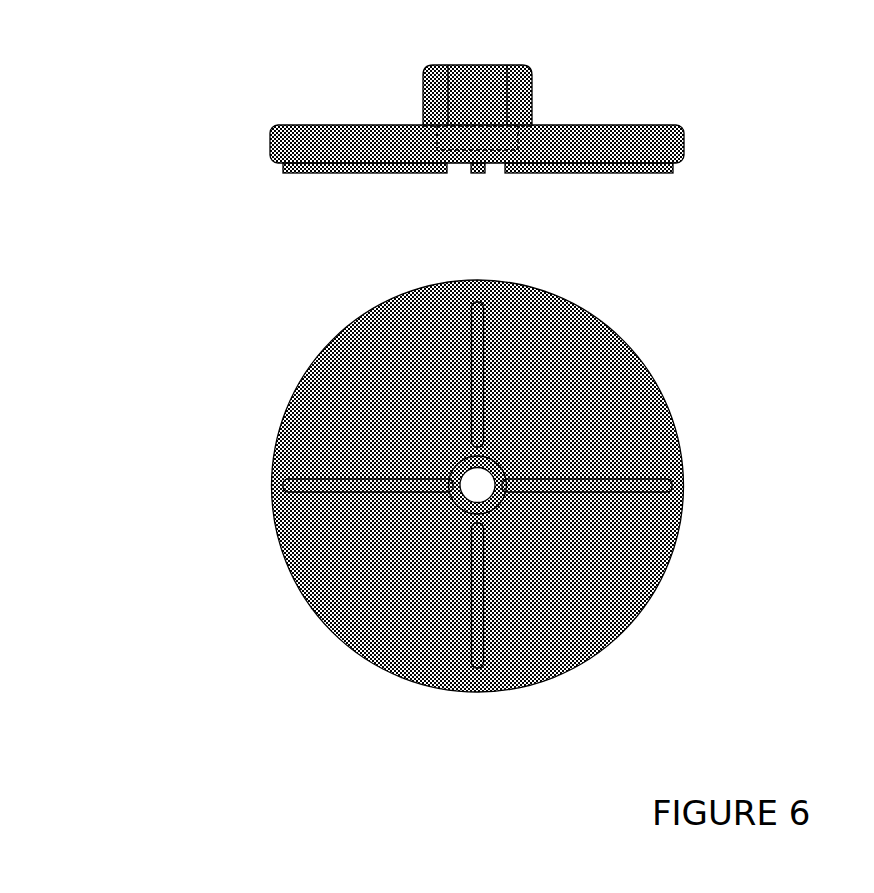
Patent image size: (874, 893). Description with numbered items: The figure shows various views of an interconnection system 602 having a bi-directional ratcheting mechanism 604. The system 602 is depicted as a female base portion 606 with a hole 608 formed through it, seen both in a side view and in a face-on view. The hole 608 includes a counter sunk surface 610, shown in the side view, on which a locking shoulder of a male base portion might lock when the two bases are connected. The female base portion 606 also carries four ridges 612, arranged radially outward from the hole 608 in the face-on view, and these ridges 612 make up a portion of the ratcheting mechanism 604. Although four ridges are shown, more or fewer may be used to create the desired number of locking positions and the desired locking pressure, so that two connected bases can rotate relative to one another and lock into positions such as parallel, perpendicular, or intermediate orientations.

The interconnection system 602 is at (135, 644).
The bi-directional ratcheting mechanism 604 is at (671, 196).
The female base portion 606 is at (604, 595).
The hole 608 is at (432, 457).
The counter sunk surface 610 is at (460, 143).
The ridges 612 is at (675, 507).